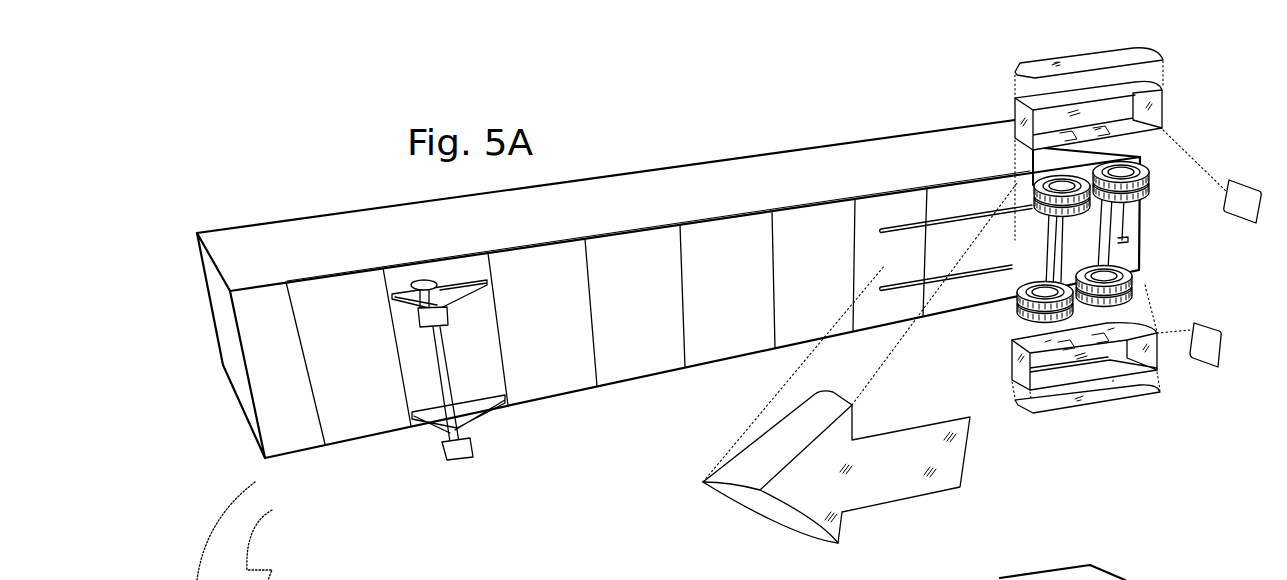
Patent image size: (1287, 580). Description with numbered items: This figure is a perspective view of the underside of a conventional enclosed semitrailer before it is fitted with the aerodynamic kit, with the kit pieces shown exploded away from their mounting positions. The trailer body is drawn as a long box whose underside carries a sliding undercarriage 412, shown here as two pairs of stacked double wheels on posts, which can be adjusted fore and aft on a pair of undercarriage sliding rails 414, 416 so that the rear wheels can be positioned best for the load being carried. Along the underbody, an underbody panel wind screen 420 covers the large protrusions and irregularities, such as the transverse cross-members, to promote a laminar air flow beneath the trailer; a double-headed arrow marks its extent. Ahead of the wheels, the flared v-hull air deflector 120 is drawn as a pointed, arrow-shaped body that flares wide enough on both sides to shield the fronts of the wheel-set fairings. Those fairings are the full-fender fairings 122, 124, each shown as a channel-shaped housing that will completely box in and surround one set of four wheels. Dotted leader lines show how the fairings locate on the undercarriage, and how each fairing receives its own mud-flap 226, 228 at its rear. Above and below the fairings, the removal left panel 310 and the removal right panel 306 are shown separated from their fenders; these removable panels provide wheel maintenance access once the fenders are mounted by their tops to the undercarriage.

The flared v-hull air deflector 120 is at (730, 490).
The full-fender fairing 122 is at (1004, 108).
The full-fender fairing 124 is at (1004, 374).
The mud-flap 226 is at (1227, 203).
The mud-flap 228 is at (1217, 345).
The removal right panel 306 is at (1103, 405).
The removal left panel 310 is at (1080, 53).
The sliding undercarriage 412 is at (1125, 243).
The undercarriage sliding rail 414 is at (888, 230).
The undercarriage sliding rail 416 is at (988, 278).
The underbody panel wind screen 420 is at (537, 297).